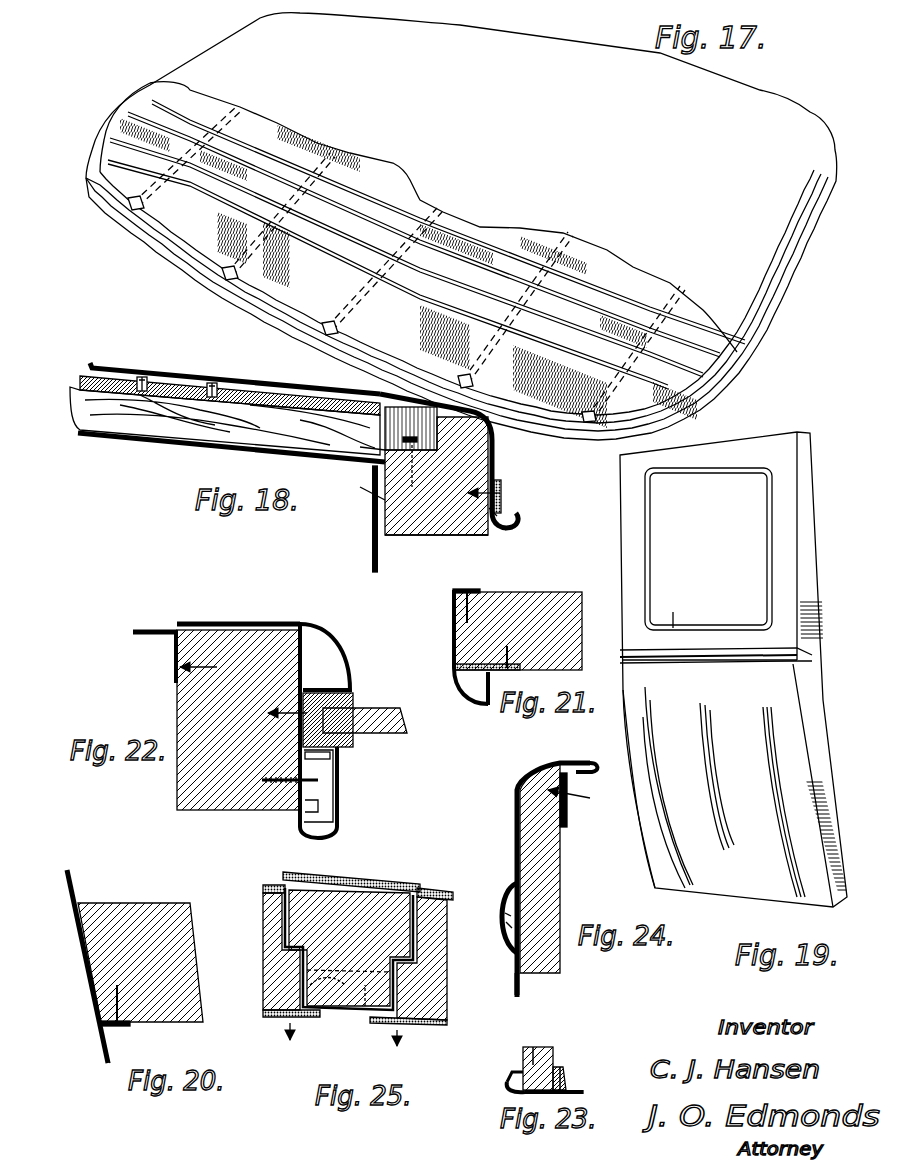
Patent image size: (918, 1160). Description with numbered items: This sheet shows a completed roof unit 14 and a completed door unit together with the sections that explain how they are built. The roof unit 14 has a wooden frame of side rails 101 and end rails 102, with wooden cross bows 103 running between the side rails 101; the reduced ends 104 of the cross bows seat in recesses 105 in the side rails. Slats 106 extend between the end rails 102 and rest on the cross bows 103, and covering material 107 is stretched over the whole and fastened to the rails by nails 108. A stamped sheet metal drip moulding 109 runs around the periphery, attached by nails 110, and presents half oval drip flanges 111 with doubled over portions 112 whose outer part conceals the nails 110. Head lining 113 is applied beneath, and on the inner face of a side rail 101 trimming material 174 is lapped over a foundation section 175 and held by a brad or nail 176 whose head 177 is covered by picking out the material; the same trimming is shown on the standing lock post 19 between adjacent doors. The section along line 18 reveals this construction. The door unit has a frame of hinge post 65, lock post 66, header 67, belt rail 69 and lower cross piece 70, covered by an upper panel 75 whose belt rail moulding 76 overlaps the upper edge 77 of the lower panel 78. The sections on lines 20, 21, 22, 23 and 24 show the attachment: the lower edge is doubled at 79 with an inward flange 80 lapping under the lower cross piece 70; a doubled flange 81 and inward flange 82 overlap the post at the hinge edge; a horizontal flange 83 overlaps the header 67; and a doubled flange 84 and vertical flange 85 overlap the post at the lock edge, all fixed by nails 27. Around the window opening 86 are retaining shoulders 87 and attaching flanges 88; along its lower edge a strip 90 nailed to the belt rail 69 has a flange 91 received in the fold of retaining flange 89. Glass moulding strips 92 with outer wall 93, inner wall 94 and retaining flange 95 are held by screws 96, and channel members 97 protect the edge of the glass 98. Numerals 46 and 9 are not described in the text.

In FIG. 17, the roof unit 14 is at (176, 63).
In FIG. 17, the side rails 101 is at (256, 297).
In FIG. 18, the side rails 101 is at (447, 530).
In FIG. 17, the end rails 102 is at (140, 108).
In FIG. 17, the cross bows 103 is at (232, 106).
In FIG. 18, the cross bows 103 is at (170, 428).
In FIG. 18, the ends of cross bows 104 is at (470, 452).
In FIG. 18, the recesses 105 is at (487, 432).
In FIG. 17, the slats 106 is at (628, 285).
In FIG. 18, the slats 106 is at (195, 390).
In FIG. 17, the covering material 107 is at (728, 266).
In FIG. 18, the covering material 107 is at (134, 374).
In FIG. 18, the nails 108 is at (498, 514).
In FIG. 18, the drip moulding 109 is at (487, 549).
In FIG. 18, the nails 110 is at (503, 494).
In FIG. 18, the drip flanges 111 is at (518, 528).
In FIG. 18, the doubled over portions 112 is at (504, 482).
In FIG. 18, the head lining 113 is at (198, 447).
In FIG. 18, the trimming material 174 is at (370, 541).
In FIG. 24, the trimming material 174 is at (505, 915).
In FIG. 25, the trimming material 174 is at (270, 878).
In FIG. 18, the foundation section 175 is at (380, 543).
In FIG. 25, the foundation section 175 is at (395, 886).
In FIG. 18, the brad or nail 176 is at (370, 481).
In FIG. 25, the brad or nail 176 is at (293, 878).
In FIG. 18, the head of nail 177 is at (370, 491).
In FIG. 25, the head of nail 177 is at (322, 878).
In FIG. 17, the section line 18— 18 is at (468, 190).
In FIG. 18, the section line 18— 18 is at (327, 363).
In FIG. 25, the standing lock post 19 is at (380, 888).
In FIG. 19, the section line 20— 20 is at (705, 873).
In FIG. 19, the section line 21— 21 is at (715, 472).
In FIG. 19, the section line 22— 22 is at (665, 565).
In FIG. 19, the section line 23— 23 is at (753, 555).
In FIG. 19, the section line 24— 24 is at (710, 685).
In FIG. 21, the nails 27 is at (476, 597).
In FIG. 22, the nails 27 is at (190, 672).
In FIG. 24, the nails 27 is at (580, 801).
In FIG. 20, the nails 27 is at (120, 1010).
In FIG. 23, the nails 27 is at (533, 1048).
In FIG. 25, the hidden member 46 is at (345, 1010).
In FIG. 25, the frame member 9 is at (366, 1010).
In FIG. 23, the hinge post 65 is at (548, 1047).
In FIG. 22, the lock post 66 is at (250, 655).
In FIG. 21, the upper cross piece or header 67 is at (552, 610).
In FIG. 24, the belt rail 69 is at (552, 958).
In FIG. 20, the lower cross piece 70 is at (153, 918).
In FIG. 19, the upper panel 75 is at (783, 578).
In FIG. 21, the upper panel 75 is at (452, 632).
In FIG. 22, the upper panel 75 is at (233, 622).
In FIG. 24, the upper panel 75 is at (516, 853).
In FIG. 23, the upper panel 75 is at (583, 1090).
In FIG. 19, the belt rail moulding 76 is at (778, 648).
In FIG. 24, the belt rail moulding 76 is at (507, 910).
In FIG. 19, the upper edge of lower panel 77 is at (792, 657).
In FIG. 24, the upper edge of lower panel 77 is at (507, 926).
In FIG. 19, the lower panel 78 is at (773, 723).
In FIG. 24, the lower panel 78 is at (515, 984).
In FIG. 20, the lower panel 78 is at (82, 967).
In FIG. 20, the doubled lower edge 79 is at (105, 1052).
In FIG. 20, the inwardly extending flange 80 is at (112, 1027).
In FIG. 22, the doubled over flange 81 is at (150, 630).
In FIG. 22, the inwardly extending flange 82 is at (176, 650).
In FIG. 21, the horizontal flange 83 is at (457, 592).
In FIG. 23, the doubled flange 84 is at (575, 1083).
In FIG. 23, the vertical flange 85 is at (565, 1070).
In FIG. 19, the window opening 86 is at (760, 478).
In FIG. 19, the window retaining shoulders or flanges 87 is at (665, 611).
In FIG. 21, the window retaining shoulders or flanges 87 is at (470, 702).
In FIG. 22, the window retaining shoulders or flanges 87 is at (330, 649).
In FIG. 23, the window retaining shoulders or flanges 87 is at (510, 1086).
In FIG. 21, the attaching flanges 88 is at (489, 706).
In FIG. 22, the attaching flanges 88 is at (292, 690).
In FIG. 23, the attaching flanges 88 is at (522, 1073).
In FIG. 24, the window retaining flange 89 is at (590, 762).
In FIG. 24, the strip 90 is at (567, 821).
In FIG. 24, the inwardly extending flange 91 is at (575, 770).
In FIG. 22, the glass moulding strips 92 is at (340, 824).
In FIG. 22, the outer wall 93 is at (338, 769).
In FIG. 22, the inner wall 94 is at (313, 782).
In FIG. 22, the inner window retaining flange 95 is at (335, 755).
In FIG. 22, the screws 96 is at (338, 805).
In FIG. 22, the channel members 97 is at (345, 699).
In FIG. 22, the glass 98 is at (403, 736).